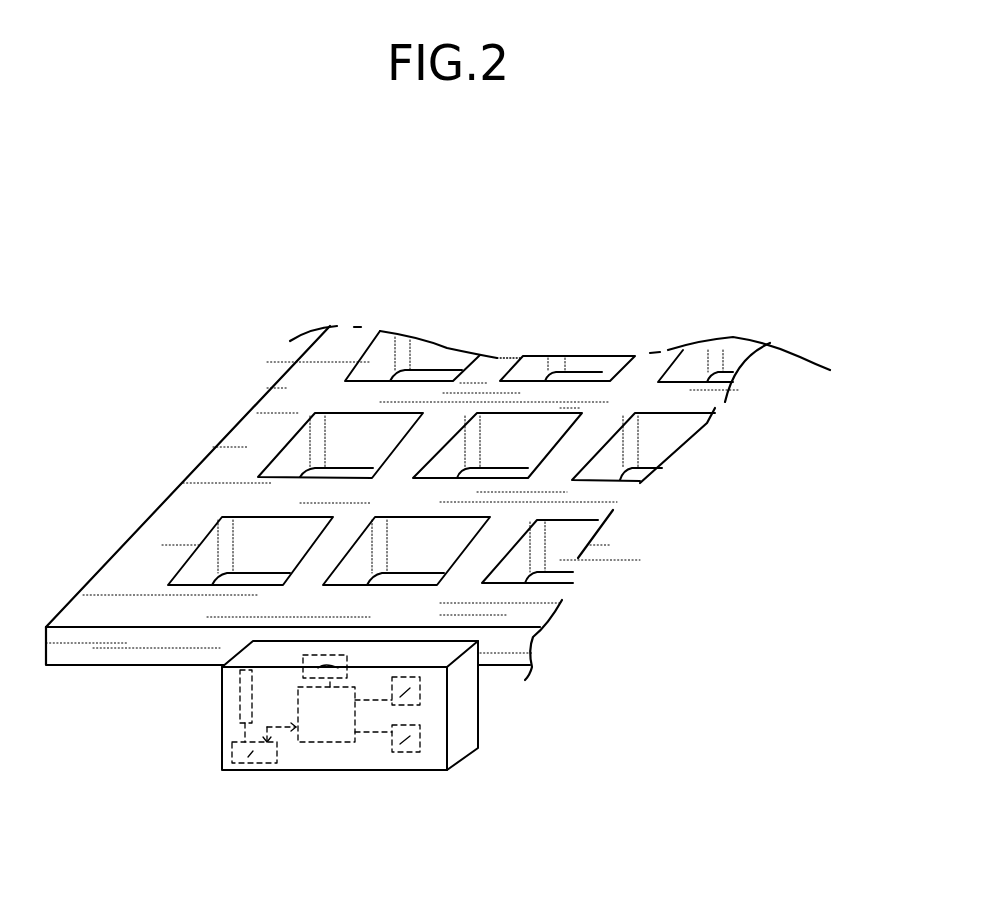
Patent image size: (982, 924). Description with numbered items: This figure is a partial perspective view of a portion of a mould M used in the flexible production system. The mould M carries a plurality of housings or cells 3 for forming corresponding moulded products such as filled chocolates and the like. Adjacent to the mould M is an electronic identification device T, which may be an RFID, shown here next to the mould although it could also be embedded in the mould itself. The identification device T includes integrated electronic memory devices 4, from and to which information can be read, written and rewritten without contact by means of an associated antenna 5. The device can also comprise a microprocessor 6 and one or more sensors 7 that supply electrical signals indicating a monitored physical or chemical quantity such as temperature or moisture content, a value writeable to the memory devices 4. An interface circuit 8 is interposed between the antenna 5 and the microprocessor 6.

The mould M is at (237, 417).
The electronic identification device T is at (221, 728).
The housings or cells 3 is at (293, 470).
The integrated electronic memory devices 4 is at (340, 667).
The antenna 5 is at (222, 700).
The microprocessor 6 is at (333, 732).
The sensors 7 is at (420, 690).
The interface circuit 8 is at (243, 765).